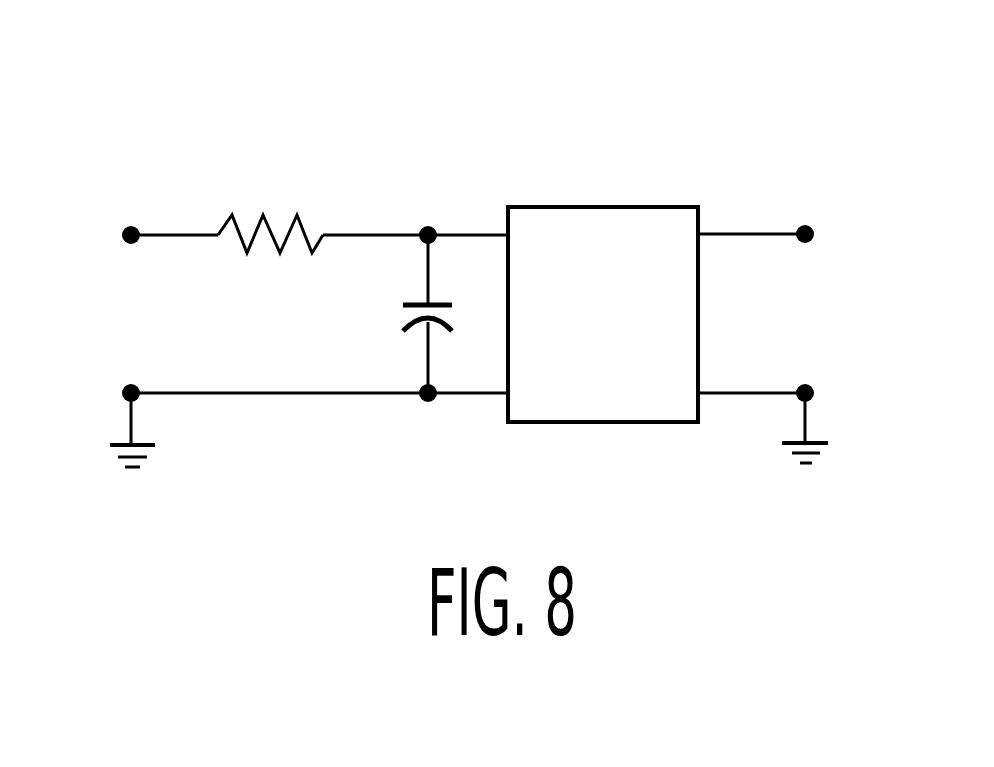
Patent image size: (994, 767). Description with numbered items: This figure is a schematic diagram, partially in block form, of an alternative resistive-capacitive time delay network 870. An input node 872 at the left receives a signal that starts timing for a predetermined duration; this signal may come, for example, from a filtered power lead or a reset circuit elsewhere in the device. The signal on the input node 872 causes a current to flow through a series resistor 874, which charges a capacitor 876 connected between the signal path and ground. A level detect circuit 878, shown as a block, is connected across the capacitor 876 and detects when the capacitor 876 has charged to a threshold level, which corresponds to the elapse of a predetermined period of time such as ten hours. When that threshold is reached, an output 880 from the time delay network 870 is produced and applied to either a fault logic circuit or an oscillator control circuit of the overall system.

The time delay network 870 is at (308, 158).
The input node 872 is at (131, 225).
The resistor 874 is at (272, 249).
The capacitor 876 is at (440, 301).
The level detect circuit 878 is at (603, 206).
The output 880 is at (805, 222).